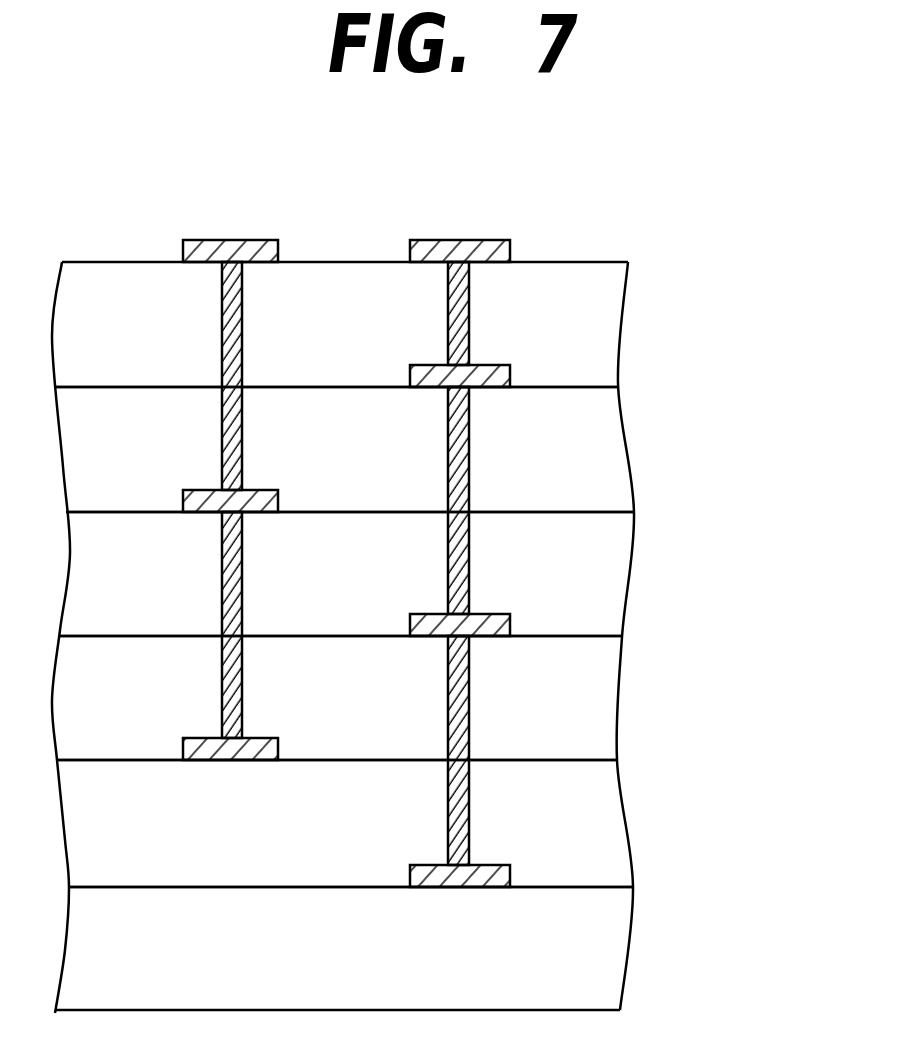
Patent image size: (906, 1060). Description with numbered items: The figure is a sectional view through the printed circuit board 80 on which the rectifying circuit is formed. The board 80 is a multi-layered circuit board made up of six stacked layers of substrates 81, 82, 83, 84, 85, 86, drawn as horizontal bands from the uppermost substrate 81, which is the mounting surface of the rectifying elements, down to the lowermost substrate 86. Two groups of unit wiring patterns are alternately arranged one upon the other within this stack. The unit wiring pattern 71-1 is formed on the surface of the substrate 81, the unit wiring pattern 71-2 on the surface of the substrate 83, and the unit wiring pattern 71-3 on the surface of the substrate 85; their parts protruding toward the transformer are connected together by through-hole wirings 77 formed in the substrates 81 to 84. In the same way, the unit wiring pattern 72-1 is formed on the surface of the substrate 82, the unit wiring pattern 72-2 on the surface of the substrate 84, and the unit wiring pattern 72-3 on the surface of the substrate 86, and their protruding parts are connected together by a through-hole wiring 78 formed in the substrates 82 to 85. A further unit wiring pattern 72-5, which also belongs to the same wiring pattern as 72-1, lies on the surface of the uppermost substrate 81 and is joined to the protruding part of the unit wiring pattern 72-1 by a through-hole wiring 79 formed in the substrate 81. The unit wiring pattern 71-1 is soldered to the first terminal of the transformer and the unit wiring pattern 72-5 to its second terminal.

The unit wiring pattern 71-1 is at (204, 240).
The unit wiring pattern 71-2 is at (204, 490).
The unit wiring pattern 71-3 is at (204, 738).
The unit wiring pattern 72-1 is at (430, 365).
The unit wiring pattern 72-2 is at (430, 614).
The unit wiring pattern 72-3 is at (430, 865).
The unit wiring pattern 72-5 is at (430, 240).
The through-hole wirings 77 is at (242, 443).
The through-hole wiring 78 is at (471, 456).
The through-hole wiring 79 is at (471, 325).
The printed circuit board 80 is at (747, 1033).
The substrate 81 is at (582, 325).
The substrate 82 is at (582, 440).
The substrate 83 is at (582, 560).
The substrate 84 is at (582, 690).
The substrate 85 is at (582, 807).
The substrate 86 is at (582, 946).